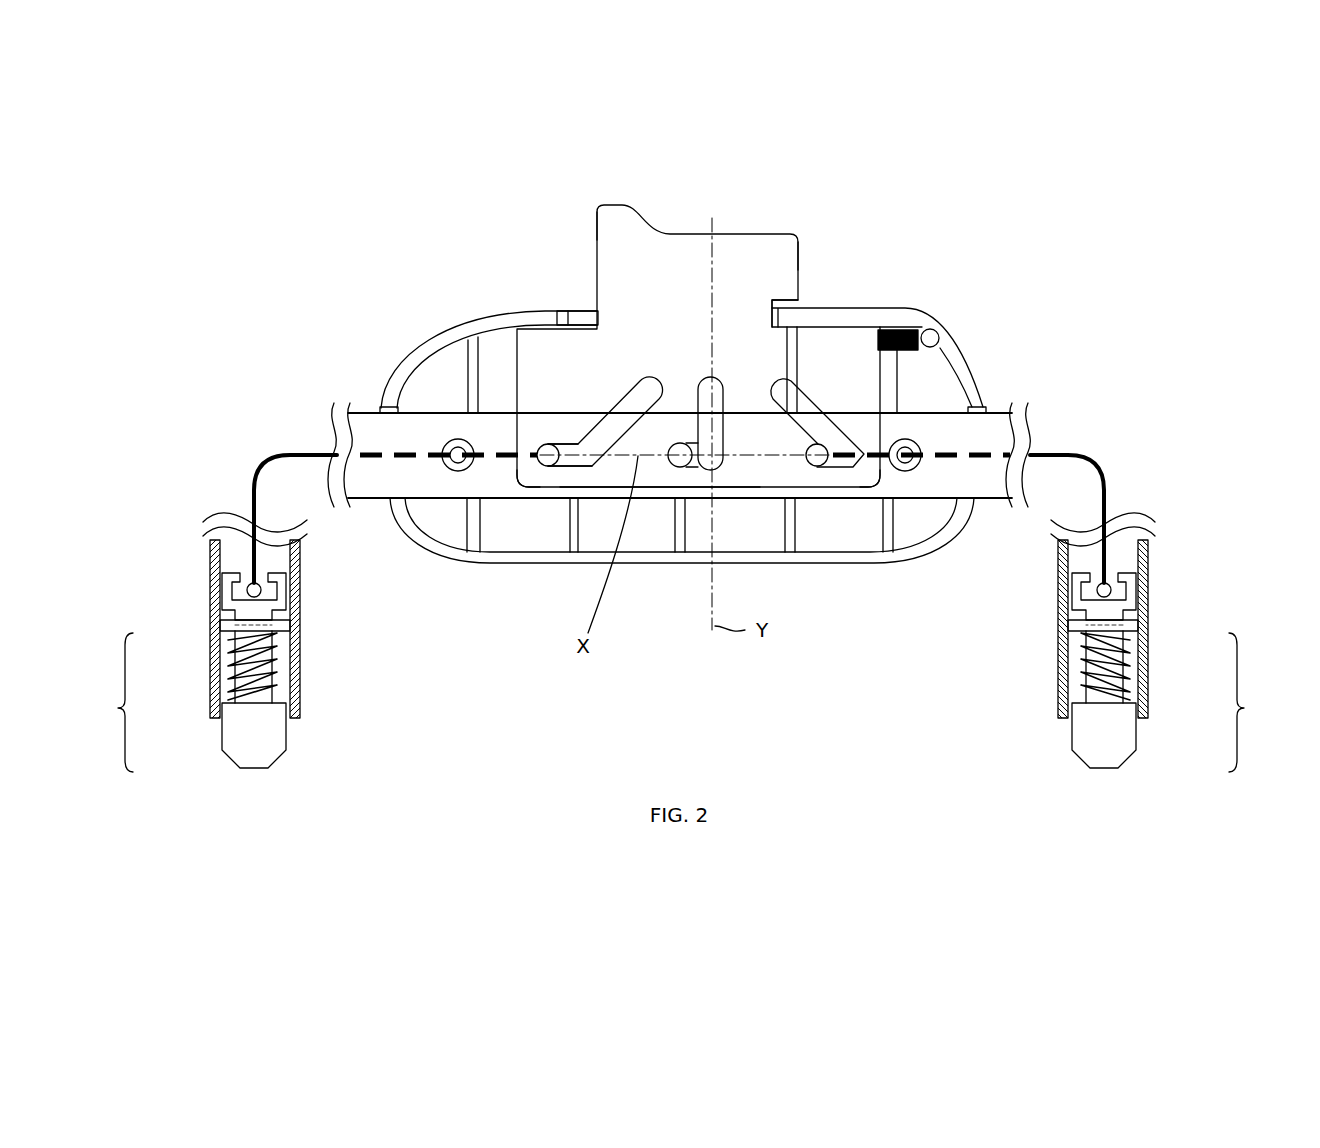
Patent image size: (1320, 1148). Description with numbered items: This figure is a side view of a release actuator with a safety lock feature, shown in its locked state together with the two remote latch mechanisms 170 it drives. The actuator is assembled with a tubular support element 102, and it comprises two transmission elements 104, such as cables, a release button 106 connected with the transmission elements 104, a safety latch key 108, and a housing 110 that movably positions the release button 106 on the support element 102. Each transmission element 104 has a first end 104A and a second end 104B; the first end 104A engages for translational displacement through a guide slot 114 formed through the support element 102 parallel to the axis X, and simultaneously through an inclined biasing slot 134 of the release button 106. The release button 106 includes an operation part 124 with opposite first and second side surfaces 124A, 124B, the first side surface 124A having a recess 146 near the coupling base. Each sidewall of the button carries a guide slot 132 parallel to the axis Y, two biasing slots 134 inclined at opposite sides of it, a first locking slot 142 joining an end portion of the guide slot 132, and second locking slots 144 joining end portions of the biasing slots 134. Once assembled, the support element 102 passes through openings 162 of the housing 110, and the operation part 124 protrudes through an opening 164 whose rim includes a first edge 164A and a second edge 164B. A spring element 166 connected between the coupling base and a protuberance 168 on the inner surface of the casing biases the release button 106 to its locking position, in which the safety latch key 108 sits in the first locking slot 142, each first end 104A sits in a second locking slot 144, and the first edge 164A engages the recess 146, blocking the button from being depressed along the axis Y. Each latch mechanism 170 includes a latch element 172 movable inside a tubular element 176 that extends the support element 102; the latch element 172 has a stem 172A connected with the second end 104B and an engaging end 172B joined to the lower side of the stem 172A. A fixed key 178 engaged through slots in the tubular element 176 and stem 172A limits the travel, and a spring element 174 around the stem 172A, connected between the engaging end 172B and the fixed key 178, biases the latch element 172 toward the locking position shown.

The support element 102 is at (990, 495).
The transmission element 104 is at (281, 452).
The first end 104A is at (548, 466).
The second end 104B is at (243, 592).
The release button 106 is at (774, 180).
The safety latch key 108 is at (683, 467).
The housing 110 is at (420, 312).
The guide slot 114 is at (594, 443).
The operation part 124 is at (678, 252).
The first side surface 124A is at (798, 252).
The second side surface 124B is at (597, 232).
The guide slot 132 is at (726, 378).
The biasing slot 134 is at (648, 382).
The first locking slot 142 is at (663, 488).
The second locking slot 144 is at (527, 488).
The recess 146 is at (772, 305).
The opening 162 is at (385, 407).
The opening 164 is at (587, 318).
The first edge 164A is at (785, 319).
The latch block 164B is at (563, 312).
The spring element 166 is at (906, 334).
The protuberance 168 is at (940, 338).
The latch mechanism 170 is at (398, 668).
The latch element 172 is at (679, 702).
The stem 172A is at (230, 665).
The engaging end 172B is at (238, 750).
The spring element 174 is at (278, 682).
The tubular element 176 is at (210, 557).
The fixed key 178 is at (291, 626).